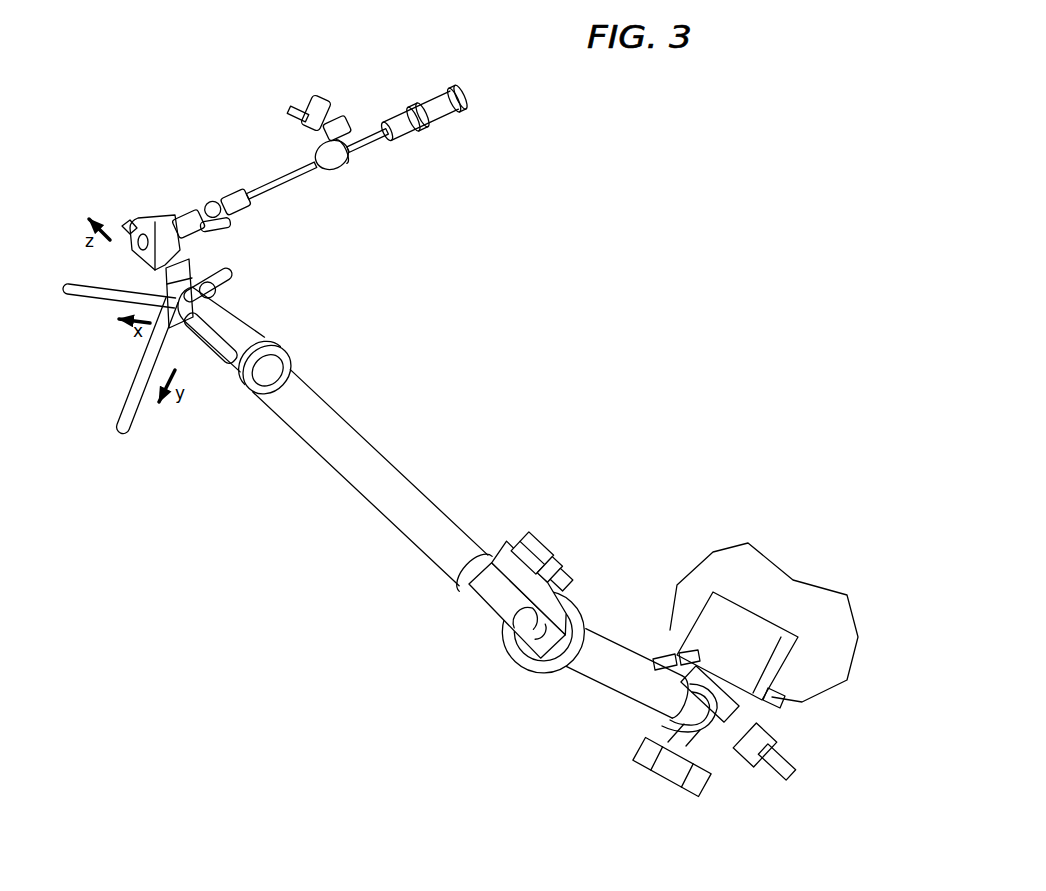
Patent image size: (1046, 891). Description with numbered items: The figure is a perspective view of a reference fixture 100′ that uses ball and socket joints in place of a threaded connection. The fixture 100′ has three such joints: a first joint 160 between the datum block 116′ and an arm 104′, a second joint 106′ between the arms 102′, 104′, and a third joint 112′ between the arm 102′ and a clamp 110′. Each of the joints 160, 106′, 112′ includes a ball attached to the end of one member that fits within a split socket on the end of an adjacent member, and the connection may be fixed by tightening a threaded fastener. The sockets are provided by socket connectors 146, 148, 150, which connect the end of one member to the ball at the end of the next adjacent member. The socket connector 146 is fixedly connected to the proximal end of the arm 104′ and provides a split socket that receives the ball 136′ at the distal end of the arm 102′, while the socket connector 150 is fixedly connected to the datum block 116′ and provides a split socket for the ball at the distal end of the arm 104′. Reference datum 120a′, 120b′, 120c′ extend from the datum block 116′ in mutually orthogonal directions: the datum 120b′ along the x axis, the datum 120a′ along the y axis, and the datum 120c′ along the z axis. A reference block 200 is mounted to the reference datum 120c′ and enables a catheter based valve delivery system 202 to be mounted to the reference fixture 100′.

The reference fixture 100′ is at (430, 497).
The arm 102′ is at (605, 643).
The arm 104′ is at (437, 503).
The second joint 106′ is at (630, 537).
The clamp 110′ is at (672, 738).
The third joint 112′ is at (742, 718).
The datum block 116′ is at (170, 288).
The reference datum 120a′ is at (118, 421).
The reference datum 120b′ is at (107, 302).
The reference datum 120c′ is at (182, 276).
The ball 136′ is at (537, 635).
The socket connector 146 is at (515, 577).
The socket connector 148 is at (693, 712).
The socket connector 150 is at (260, 327).
The first joint 160 is at (221, 403).
The reference block 200 is at (150, 216).
The catheter based valve delivery system 202 is at (300, 176).